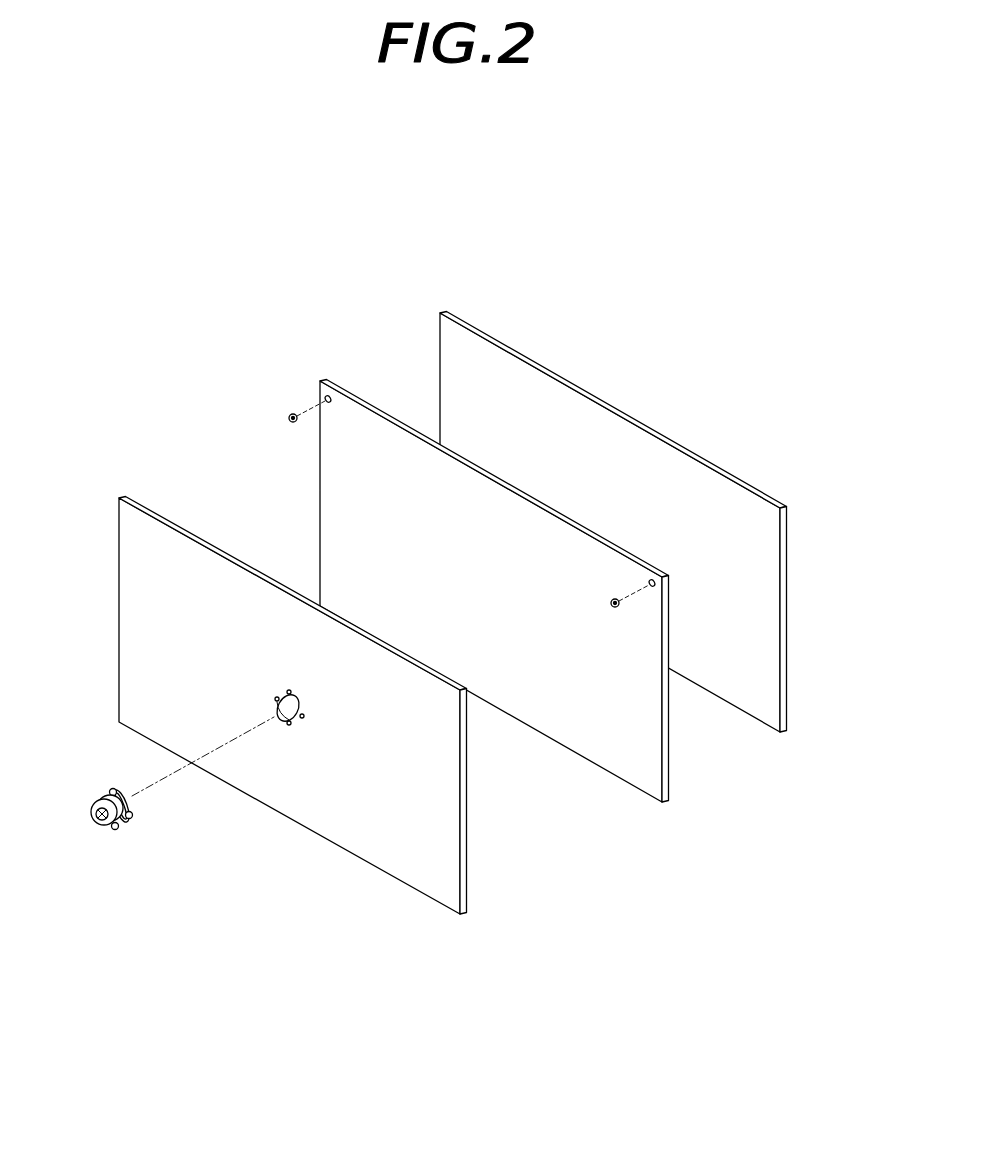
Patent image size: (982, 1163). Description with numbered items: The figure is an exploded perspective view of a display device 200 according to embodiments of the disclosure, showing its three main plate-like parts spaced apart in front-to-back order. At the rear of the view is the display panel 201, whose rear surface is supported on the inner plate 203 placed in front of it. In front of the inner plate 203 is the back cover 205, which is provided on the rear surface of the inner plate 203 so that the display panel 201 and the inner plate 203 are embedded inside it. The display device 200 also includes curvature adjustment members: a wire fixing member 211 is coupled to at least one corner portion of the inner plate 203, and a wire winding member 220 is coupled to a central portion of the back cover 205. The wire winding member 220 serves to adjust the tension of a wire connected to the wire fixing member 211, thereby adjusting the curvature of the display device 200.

The display device 200 is at (163, 284).
The display panel 201 is at (421, 290).
The inner plate 203 is at (312, 354).
The back cover 205 is at (112, 462).
The wire fixing member 211 is at (289, 418).
The wire winding member 220 is at (137, 866).